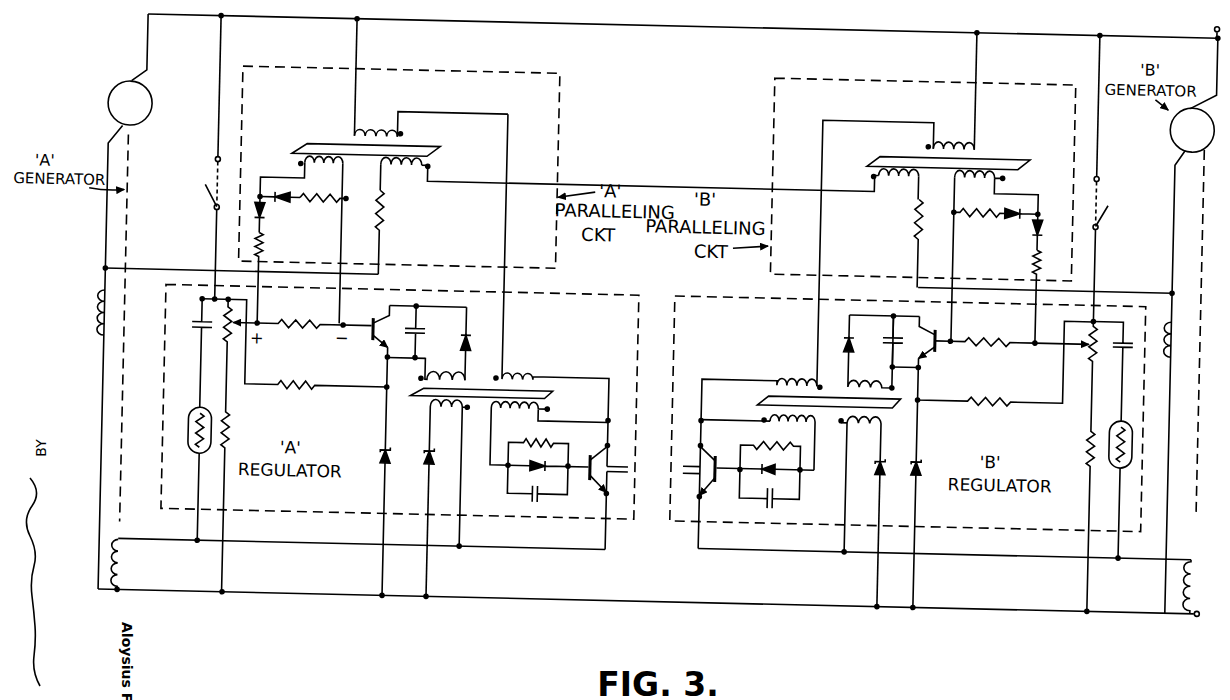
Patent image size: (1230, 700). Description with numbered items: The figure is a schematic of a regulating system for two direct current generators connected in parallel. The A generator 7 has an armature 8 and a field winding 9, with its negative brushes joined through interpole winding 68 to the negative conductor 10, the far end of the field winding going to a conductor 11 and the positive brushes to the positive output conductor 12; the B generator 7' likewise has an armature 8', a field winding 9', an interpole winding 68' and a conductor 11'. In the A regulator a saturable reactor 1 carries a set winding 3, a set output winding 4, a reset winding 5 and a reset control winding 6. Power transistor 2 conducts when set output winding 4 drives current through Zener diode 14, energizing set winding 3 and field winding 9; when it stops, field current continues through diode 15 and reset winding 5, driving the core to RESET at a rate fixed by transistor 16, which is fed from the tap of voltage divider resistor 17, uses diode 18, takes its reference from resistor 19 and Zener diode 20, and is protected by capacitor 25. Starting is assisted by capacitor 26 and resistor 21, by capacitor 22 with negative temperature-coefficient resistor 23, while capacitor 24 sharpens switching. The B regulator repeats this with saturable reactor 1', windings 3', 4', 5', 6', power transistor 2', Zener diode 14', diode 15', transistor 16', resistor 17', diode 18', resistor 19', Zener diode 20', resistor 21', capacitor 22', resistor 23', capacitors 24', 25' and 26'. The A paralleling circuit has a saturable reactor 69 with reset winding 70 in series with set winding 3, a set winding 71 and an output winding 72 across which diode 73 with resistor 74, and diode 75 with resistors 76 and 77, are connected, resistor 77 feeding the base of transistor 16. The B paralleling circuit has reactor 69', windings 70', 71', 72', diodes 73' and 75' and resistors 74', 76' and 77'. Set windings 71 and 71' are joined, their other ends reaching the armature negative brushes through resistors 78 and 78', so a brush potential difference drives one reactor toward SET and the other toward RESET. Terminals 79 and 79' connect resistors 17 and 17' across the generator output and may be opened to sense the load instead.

The saturable reactor 1 is at (496, 389).
The saturable reactor 1' is at (808, 401).
The power transistor 2 is at (592, 477).
The power transistor 2' is at (716, 478).
The set winding 3 is at (553, 332).
The set winding 3' is at (759, 453).
The set output winding 4 is at (549, 434).
The set output winding 4' is at (858, 485).
The reset winding 5 is at (448, 474).
The reset winding 5' is at (757, 441).
The reset control winding 6 is at (442, 364).
The reset control winding 6' is at (872, 353).
The A generator 7 is at (134, 328).
The B generator 7' is at (1175, 332).
The armature 8 is at (133, 301).
The armature 8' is at (1173, 326).
The field winding 9 is at (133, 566).
The field winding 9' is at (1167, 586).
The negative conductor 10 is at (683, 568).
The conductor 11 is at (361, 561).
The conductor 11' is at (944, 570).
The positive output conductor 12 is at (540, 14).
The Zener diode 14 is at (533, 478).
The Zener diode 14' is at (775, 478).
The semiconductor diode 15 is at (411, 524).
The semiconductor diode 15' is at (891, 534).
The transistor 16 is at (371, 328).
The transistor 16' is at (945, 343).
The voltage divider resistor 17 is at (227, 447).
The voltage divider resistor 17' is at (1077, 467).
The semiconductor diode 18 is at (478, 344).
The semiconductor diode 18' is at (835, 333).
The resistor 19 is at (295, 345).
The resistor 19' is at (1004, 363).
The Zener diode 20 is at (371, 478).
The Zener diode 20' is at (929, 505).
The resistor 21 is at (545, 457).
The resistor 21' is at (761, 461).
The capacitor 22 is at (192, 352).
The capacitor 22' is at (1112, 371).
The negative temperature-coefficient resistor 23 is at (188, 475).
The negative temperature-coefficient resistor 23' is at (1113, 491).
The capacitor 24 is at (517, 500).
The capacitor 24' is at (789, 503).
The capacitor 25 is at (428, 332).
The capacitor 25' is at (879, 341).
The capacitor 26 is at (638, 445).
The capacitor 26' is at (670, 482).
The interpole winding 68 is at (125, 311).
The interpole winding 68' is at (1157, 329).
The saturable reactor 69 is at (382, 115).
The saturable reactor 69' is at (928, 170).
The reset winding 70 is at (432, 79).
The reset winding 70' is at (897, 209).
The set winding 71 is at (405, 175).
The set winding 71' is at (894, 191).
The output winding 72 is at (300, 239).
The output winding 72' is at (995, 256).
The semiconductor diode 73 is at (302, 213).
The semiconductor diode 73' is at (1019, 229).
The resistor 74 is at (322, 214).
The resistor 74' is at (977, 229).
The semiconductor diode 75 is at (240, 221).
The semiconductor diode 75' is at (1049, 220).
The resistor 76 is at (277, 278).
The resistor 76' is at (1018, 296).
The resistor 77 is at (313, 313).
The resistor 77' is at (1019, 327).
The resistor 78 is at (396, 232).
The resistor 78' is at (897, 242).
The terminal 79 is at (206, 158).
The terminal 79' is at (1115, 180).